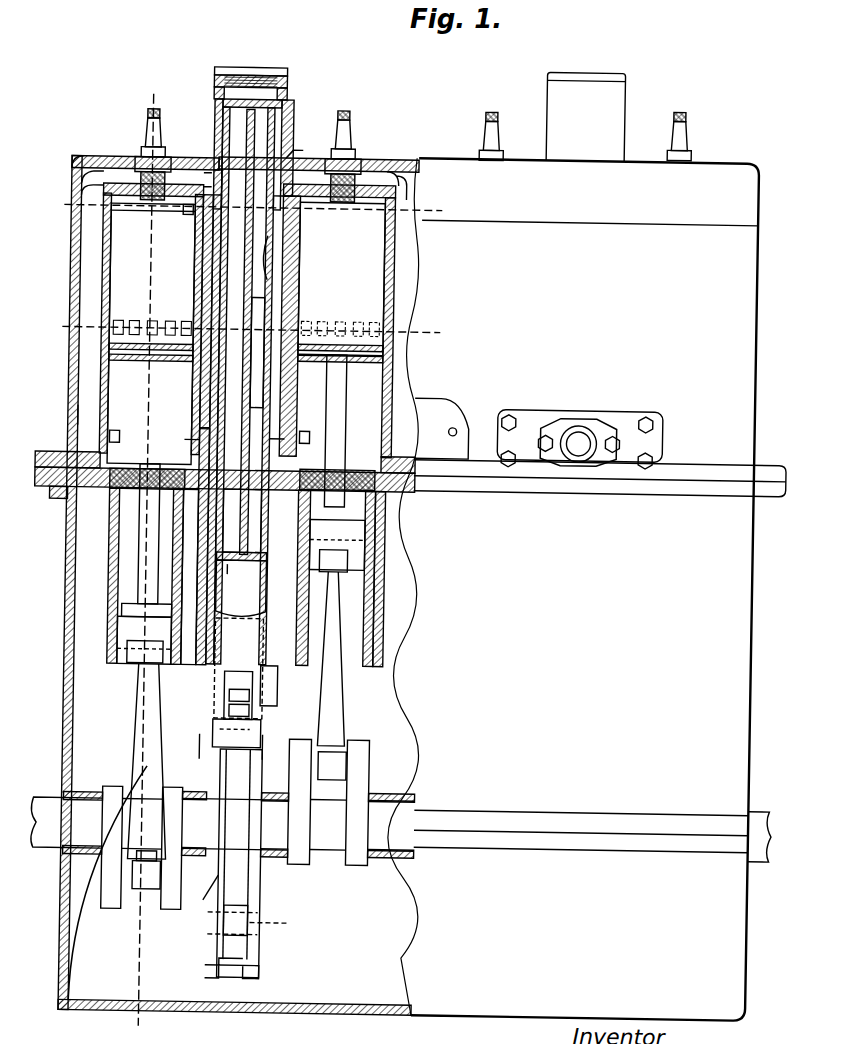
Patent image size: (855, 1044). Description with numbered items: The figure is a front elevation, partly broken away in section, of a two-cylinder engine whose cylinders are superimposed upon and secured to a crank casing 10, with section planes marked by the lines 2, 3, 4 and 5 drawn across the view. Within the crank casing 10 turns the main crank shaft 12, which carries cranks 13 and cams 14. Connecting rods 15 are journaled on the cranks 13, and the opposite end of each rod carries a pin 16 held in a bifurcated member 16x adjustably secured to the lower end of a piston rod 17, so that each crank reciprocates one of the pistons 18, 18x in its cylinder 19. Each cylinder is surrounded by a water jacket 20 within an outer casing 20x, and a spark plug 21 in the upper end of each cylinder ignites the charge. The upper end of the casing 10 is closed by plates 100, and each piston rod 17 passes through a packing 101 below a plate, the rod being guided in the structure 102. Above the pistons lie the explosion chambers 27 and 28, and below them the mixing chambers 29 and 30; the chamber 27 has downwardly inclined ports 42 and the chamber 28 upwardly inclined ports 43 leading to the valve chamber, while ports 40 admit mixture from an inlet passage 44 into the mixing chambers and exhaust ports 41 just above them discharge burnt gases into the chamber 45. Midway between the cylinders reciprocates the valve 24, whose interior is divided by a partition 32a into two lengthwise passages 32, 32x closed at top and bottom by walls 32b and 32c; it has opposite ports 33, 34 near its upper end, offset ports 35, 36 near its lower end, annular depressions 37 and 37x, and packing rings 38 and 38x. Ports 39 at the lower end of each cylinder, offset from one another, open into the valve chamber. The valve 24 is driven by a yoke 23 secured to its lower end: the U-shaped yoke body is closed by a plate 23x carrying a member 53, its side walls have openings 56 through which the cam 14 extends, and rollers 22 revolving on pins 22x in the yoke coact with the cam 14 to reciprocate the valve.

The section line 2- 2 is at (143, 557).
The section line 3- 3 is at (246, 208).
The section line 4- 4 is at (244, 329).
The section line / flange plate 5- 5 is at (50, 456).
The crank casing 10 is at (737, 685).
The crank shaft 12 is at (48, 808).
The cranks 13 is at (113, 908).
The cams 14 is at (243, 878).
The connecting rods 15 is at (134, 733).
The pin 16 is at (128, 671).
The bifurcated member 16x is at (118, 628).
The piston rod 17 is at (140, 571).
The piston 18 is at (112, 388).
The piston 18x is at (410, 280).
The cylinder 19 is at (97, 281).
The water jacket 20 is at (67, 415).
The outer casing 20x is at (740, 287).
The spark plug 21 is at (139, 132).
The rollers 22 is at (248, 913).
The pins 22x is at (281, 924).
The yoke 23 is at (259, 946).
The plate 23x is at (264, 730).
The valve 24 is at (265, 688).
The explosion chamber 27 is at (105, 249).
The explosion chamber 28 is at (396, 196).
The mixing chamber 29 is at (70, 491).
The mixing chamber 30 is at (397, 396).
The passage 32 is at (236, 135).
The partition 32a is at (234, 584).
The wall 32b is at (278, 92).
The wall 32c is at (234, 577).
The passage 32x is at (270, 112).
The port 33 is at (216, 166).
The port 34 is at (267, 267).
The port 35 is at (230, 494).
The port 36 is at (250, 397).
The peripheral annular depression 37 is at (197, 265).
The peripheral annular depression 37x is at (258, 137).
The packing rings 38 is at (216, 137).
The packing rings 38x is at (192, 431).
The ports 39 is at (197, 449).
The ports 40 is at (142, 458).
The exhaust ports 41 is at (166, 325).
The ports 42 is at (197, 228).
The ports 43 is at (281, 152).
The inlet passage 44 is at (323, 515).
The chamber 45 is at (576, 428).
The member 53 is at (236, 682).
The openings 56 is at (196, 904).
The plates 100 is at (119, 471).
The packing 101 is at (108, 513).
The crosshead guide 102 is at (108, 663).